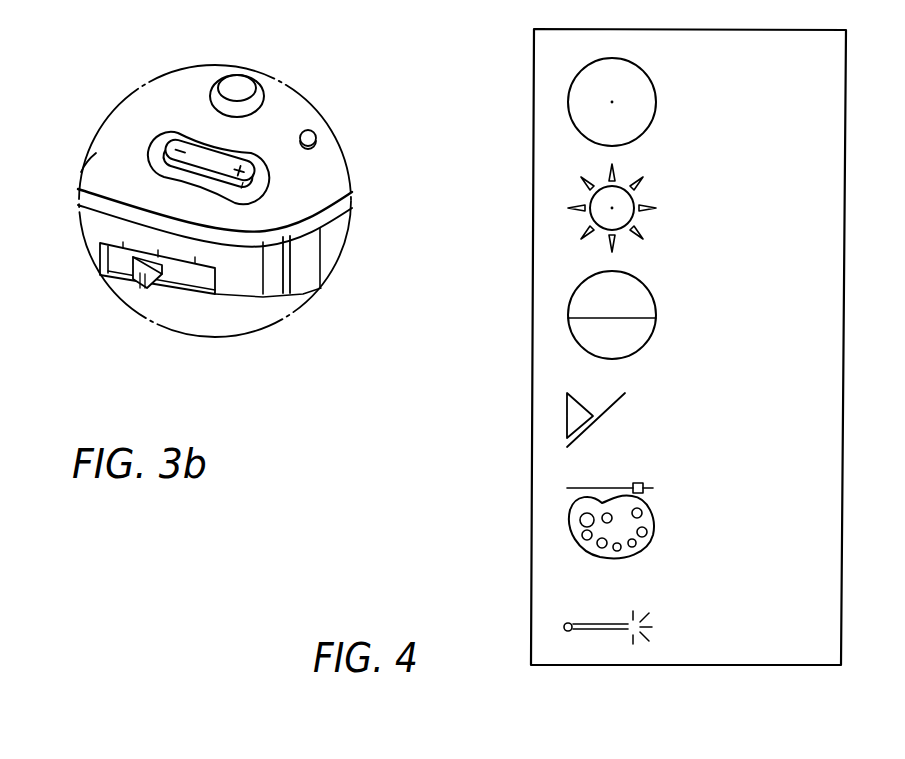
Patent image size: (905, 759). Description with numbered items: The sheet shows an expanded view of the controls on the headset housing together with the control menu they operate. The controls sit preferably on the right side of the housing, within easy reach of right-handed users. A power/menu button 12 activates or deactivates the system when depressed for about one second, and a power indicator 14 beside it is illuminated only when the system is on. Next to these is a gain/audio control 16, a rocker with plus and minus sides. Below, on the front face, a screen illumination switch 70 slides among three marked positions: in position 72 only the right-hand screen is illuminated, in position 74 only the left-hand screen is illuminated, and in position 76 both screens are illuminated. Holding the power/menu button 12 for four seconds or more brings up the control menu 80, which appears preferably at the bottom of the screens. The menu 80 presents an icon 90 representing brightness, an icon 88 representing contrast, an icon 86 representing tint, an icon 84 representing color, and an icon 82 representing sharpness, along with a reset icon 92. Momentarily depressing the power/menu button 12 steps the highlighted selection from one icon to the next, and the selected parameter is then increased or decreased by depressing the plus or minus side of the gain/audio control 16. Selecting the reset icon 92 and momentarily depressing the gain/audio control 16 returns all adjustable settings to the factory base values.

In FIG. 3B, the power/menu button 12 is at (242, 86).
In FIG. 3B, the power indicator 14 is at (312, 131).
In FIG. 3B, the gain/audio control 16 is at (268, 167).
In FIG. 3B, the screen illumination switch 70 is at (140, 287).
In FIG. 3B, the position 72 is at (203, 257).
In FIG. 3B, the position 74 is at (162, 250).
In FIG. 3B, the position 76 is at (117, 233).
In FIG. 4, the control menu 80 is at (531, 569).
In FIG. 4, the icon representing sharpness 82 is at (565, 630).
In FIG. 4, the icon representing color 84 is at (568, 511).
In FIG. 4, the icon representing tint 86 is at (560, 422).
In FIG. 4, the icon representing contrast 88 is at (568, 318).
In FIG. 4, the icon representing brightness 90 is at (565, 208).
In FIG. 4, the reset icon 92 is at (568, 116).